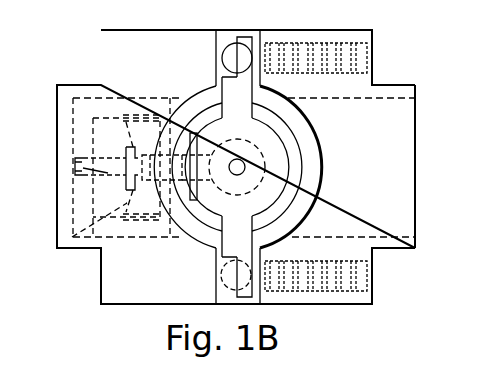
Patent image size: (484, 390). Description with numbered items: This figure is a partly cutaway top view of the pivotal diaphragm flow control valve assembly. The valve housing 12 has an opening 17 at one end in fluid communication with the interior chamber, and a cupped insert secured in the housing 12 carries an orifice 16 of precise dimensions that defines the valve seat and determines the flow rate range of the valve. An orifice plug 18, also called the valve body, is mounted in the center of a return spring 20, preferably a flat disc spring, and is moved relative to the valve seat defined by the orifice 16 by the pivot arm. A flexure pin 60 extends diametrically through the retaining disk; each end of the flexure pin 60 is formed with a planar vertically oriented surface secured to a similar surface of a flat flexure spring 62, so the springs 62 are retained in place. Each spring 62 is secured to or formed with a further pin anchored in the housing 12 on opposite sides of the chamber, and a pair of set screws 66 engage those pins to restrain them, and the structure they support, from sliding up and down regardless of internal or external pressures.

The valve housing 12 is at (383, 85).
The orifice 16 is at (80, 161).
The opening 17 is at (415, 114).
The orifice plug 18 is at (100, 173).
The return spring 20 is at (72, 237).
The flexure pin 60 is at (232, 103).
The flat flexure spring 62 is at (222, 58).
The set screw 66 is at (373, 47).